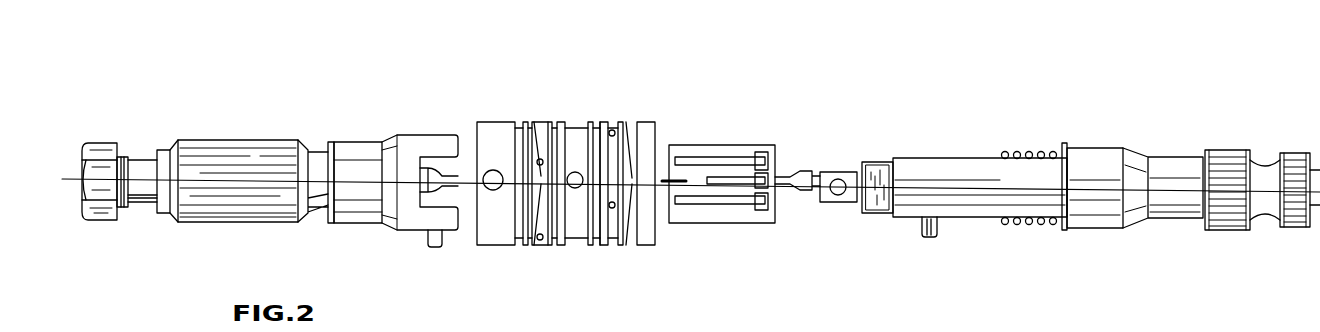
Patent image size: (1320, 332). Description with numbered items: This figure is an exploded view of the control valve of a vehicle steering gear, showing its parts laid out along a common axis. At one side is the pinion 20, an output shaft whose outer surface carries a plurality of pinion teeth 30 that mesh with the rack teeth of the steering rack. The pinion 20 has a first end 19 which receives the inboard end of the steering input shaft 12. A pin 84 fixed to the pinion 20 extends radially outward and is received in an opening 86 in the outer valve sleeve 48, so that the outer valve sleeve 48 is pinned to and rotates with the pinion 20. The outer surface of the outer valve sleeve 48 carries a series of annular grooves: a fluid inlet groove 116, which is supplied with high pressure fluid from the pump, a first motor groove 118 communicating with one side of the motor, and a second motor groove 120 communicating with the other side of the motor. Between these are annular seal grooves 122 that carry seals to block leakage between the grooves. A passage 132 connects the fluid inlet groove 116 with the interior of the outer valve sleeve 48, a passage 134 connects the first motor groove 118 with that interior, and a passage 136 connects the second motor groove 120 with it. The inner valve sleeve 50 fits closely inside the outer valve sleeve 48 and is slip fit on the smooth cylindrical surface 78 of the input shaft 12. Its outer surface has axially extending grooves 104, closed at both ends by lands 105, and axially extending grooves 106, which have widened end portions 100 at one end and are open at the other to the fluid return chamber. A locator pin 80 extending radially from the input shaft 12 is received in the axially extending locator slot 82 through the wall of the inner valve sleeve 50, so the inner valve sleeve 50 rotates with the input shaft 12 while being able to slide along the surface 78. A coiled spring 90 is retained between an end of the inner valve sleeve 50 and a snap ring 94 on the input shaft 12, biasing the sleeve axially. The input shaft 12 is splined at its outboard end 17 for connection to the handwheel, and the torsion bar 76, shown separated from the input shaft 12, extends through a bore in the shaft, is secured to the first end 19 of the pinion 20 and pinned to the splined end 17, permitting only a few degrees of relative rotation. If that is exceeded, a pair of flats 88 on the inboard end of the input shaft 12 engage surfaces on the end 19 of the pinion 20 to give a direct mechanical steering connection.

The steering input shaft 12 is at (1124, 128).
The splined end 17 is at (1230, 208).
The first end of pinion 19 is at (405, 155).
The pinion 20 is at (202, 101).
The pinion teeth 30 is at (245, 160).
The outer valve sleeve 48 is at (493, 62).
The inner valve sleeve 50 is at (725, 104).
The torsion bar 76 is at (794, 174).
The smooth cylindrical surface 78 is at (968, 175).
The locator pin 80 is at (932, 227).
The locator slot 82 is at (684, 186).
The pin 84 is at (432, 238).
The opening 86 is at (493, 170).
The flats 88 is at (880, 170).
The coiled spring 90 is at (1022, 152).
The snap ring 94 is at (1065, 230).
The widened end portions 100 is at (770, 157).
The axially extending grooves 104 is at (722, 157).
The lands 105 is at (916, 329).
The axially extending grooves 106 is at (735, 186).
The fluid inlet groove 116 is at (578, 128).
The first motor groove 118 is at (538, 228).
The second motor groove 120 is at (617, 128).
The annular seal grooves 122 is at (558, 128).
The passage 132 is at (577, 190).
The passage 134 is at (540, 158).
The passage 136 is at (615, 208).